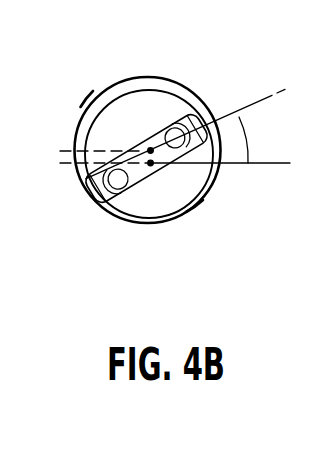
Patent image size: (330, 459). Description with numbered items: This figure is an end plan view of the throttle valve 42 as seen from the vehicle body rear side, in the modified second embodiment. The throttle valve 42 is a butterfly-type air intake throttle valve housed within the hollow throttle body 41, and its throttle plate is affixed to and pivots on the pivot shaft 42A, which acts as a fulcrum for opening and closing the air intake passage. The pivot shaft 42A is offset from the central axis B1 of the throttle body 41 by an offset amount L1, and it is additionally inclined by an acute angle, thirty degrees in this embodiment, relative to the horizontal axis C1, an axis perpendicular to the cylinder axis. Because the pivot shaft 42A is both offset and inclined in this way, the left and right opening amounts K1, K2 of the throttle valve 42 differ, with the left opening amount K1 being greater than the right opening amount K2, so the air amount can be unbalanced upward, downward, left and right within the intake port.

The throttle body 41 is at (159, 76).
The throttle valve 42 is at (113, 95).
The pivot shaft 42A is at (141, 173).
The central axis B1 is at (152, 149).
The horizontal axis C1 is at (236, 164).
The offset amount L1 is at (73, 155).
The opening amount K1 is at (83, 119).
The opening amount K2 is at (195, 207).